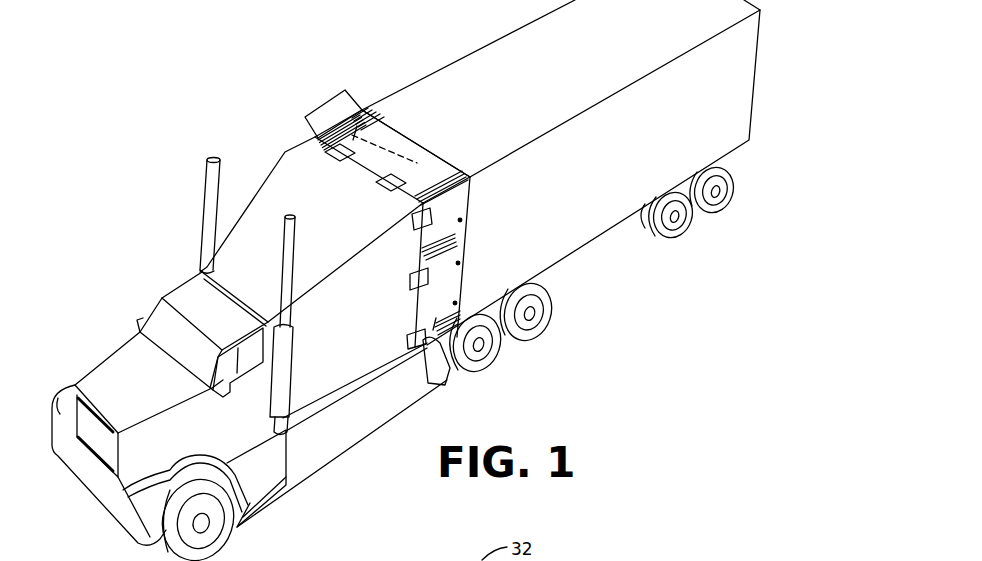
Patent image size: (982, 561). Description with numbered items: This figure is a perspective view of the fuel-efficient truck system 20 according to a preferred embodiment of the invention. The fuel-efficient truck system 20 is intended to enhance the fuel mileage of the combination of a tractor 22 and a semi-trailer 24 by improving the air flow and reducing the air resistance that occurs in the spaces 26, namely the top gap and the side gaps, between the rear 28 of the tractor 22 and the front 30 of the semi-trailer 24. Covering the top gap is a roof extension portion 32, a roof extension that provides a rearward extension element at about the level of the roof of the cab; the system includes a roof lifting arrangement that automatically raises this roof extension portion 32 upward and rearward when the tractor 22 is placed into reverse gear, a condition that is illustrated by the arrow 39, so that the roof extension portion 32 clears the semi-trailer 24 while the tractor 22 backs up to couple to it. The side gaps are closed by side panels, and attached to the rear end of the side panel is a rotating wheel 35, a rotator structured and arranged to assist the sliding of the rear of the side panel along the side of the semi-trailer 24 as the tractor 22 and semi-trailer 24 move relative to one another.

The fuel-efficient truck system 20 is at (365, 440).
The tractor 22 is at (80, 485).
The semi-trailer 24 is at (616, 226).
The spaces 26 is at (327, 102).
The rear of the tractor 28 is at (312, 131).
The front of the semi-trailer 30 is at (360, 112).
The roof extension portion 32 is at (382, 153).
The rotating wheel 35 is at (456, 303).
The arrow 39 is at (443, 384).